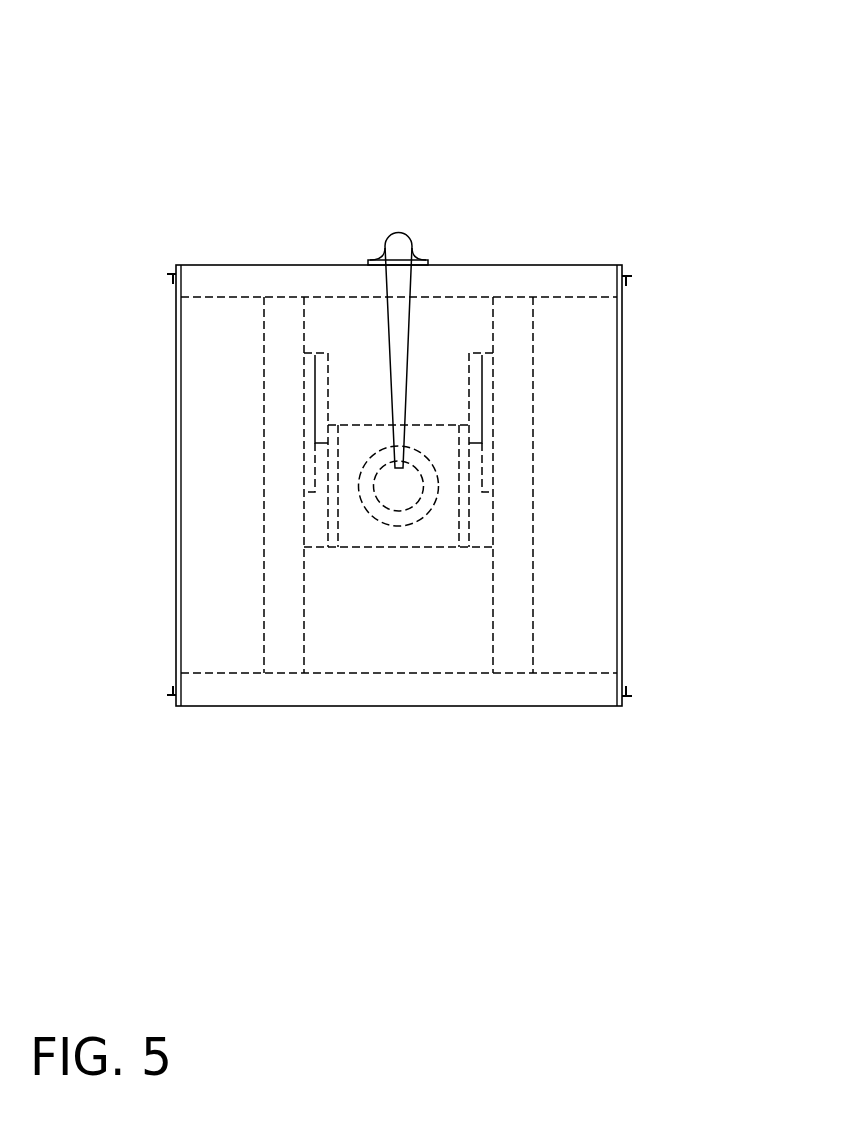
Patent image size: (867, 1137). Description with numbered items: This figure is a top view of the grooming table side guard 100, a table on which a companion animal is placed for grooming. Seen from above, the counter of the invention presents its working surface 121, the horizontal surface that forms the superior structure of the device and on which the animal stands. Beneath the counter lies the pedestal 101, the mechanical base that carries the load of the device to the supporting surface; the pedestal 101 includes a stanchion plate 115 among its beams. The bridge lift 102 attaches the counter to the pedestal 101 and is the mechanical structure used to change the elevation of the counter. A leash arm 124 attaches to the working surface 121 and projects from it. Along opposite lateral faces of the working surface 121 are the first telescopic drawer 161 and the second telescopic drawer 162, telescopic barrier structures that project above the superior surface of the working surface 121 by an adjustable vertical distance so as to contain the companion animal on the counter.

The grooming table side guard 100 is at (138, 97).
The pedestal 101 is at (515, 605).
The bridge lift 102 is at (418, 472).
The stanchion plate 115 is at (432, 530).
The working surface 121 is at (570, 365).
The leash arm 124 is at (400, 243).
The first telescopic drawer 161 is at (177, 482).
The second telescopic drawer 162 is at (623, 493).